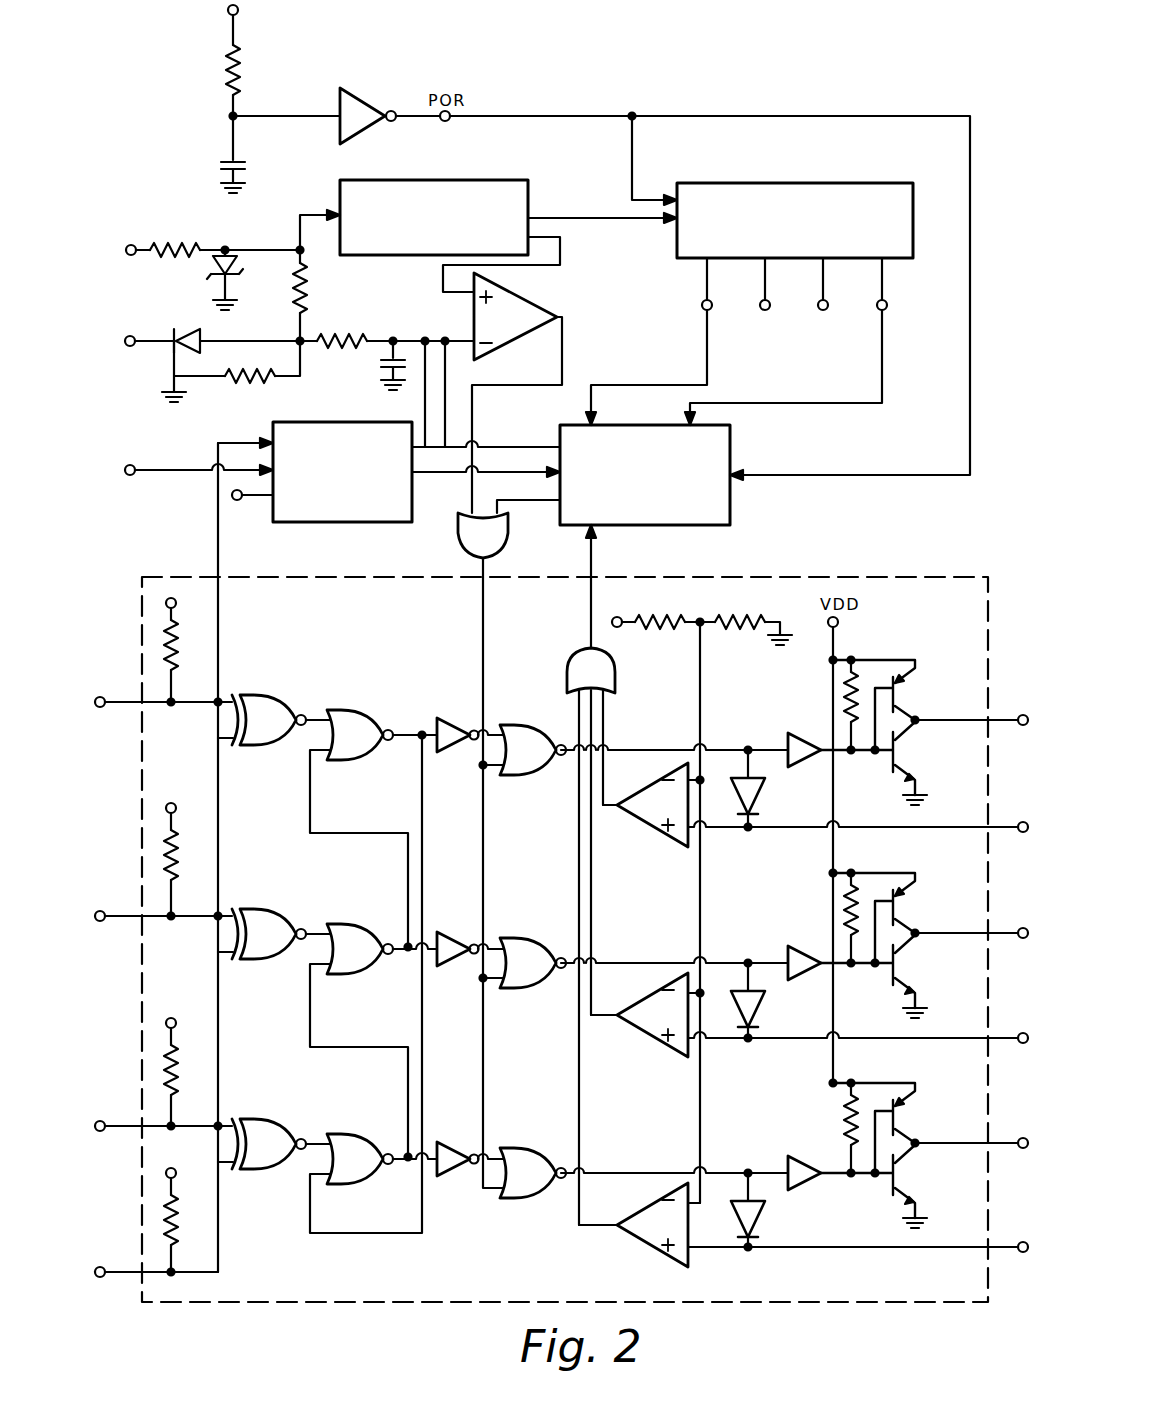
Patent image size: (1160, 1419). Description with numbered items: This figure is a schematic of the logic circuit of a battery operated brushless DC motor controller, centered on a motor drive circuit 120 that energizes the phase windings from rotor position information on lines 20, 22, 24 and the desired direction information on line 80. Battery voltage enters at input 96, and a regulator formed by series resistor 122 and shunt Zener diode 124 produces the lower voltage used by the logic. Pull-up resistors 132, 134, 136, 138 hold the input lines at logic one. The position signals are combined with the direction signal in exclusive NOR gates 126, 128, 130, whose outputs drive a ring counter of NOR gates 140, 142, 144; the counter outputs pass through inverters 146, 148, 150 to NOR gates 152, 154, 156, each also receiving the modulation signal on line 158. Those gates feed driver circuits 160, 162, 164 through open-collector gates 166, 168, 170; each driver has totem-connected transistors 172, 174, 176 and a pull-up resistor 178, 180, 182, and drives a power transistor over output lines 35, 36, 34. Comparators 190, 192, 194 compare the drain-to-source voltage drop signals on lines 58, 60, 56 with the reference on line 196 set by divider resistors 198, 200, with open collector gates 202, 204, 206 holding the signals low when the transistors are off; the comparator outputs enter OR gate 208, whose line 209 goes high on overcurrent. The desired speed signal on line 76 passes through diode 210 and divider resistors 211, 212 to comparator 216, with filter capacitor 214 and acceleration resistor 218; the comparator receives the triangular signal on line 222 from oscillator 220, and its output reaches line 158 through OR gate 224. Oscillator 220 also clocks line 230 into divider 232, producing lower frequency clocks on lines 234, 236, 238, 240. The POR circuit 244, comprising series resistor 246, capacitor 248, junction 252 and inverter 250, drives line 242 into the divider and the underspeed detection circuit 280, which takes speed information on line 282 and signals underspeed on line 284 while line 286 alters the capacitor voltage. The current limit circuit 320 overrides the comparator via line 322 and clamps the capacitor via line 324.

The rotor position line 20 is at (125, 922).
The rotor position line 22 is at (125, 1132).
The rotor position line 24 is at (125, 708).
The output line 34 is at (1012, 1138).
The output line 35 is at (1012, 715).
The output line 36 is at (1012, 928).
The drain-to-source voltage drop signal line 56 is at (1012, 1243).
The drain-to-source voltage drop signal line 58 is at (1012, 822).
The drain-to-source voltage drop signal line 60 is at (1012, 1033).
The desired speed signal line 76 is at (141, 347).
The desired direction signal line 80 is at (125, 1278).
The battery voltage input 96 is at (141, 245).
The motor drive circuit 120 is at (866, 585).
The series resistor 122 is at (188, 245).
The shunt Zener diode 124 is at (234, 283).
The exclusive NOR gate 126 is at (257, 710).
The exclusive NOR gate 128 is at (258, 925).
The exclusive NOR gate 130 is at (258, 1135).
The pull-up resistor 132 is at (175, 672).
The pull-up resistor 134 is at (176, 850).
The pull-up resistor 136 is at (176, 1062).
The pull-up resistor 138 is at (176, 1228).
The NOR gate 140 is at (350, 715).
The NOR gate 142 is at (352, 930).
The NOR gate 144 is at (352, 1140).
The inverter 146 is at (455, 715).
The inverter 148 is at (455, 930).
The inverter 150 is at (455, 1178).
The NOR gate 152 is at (524, 772).
The NOR gate 154 is at (540, 945).
The NOR gate 156 is at (525, 1160).
The modulation signal line 158 is at (480, 606).
The power transistor driver circuit 160 is at (901, 699).
The power transistor driver circuit 162 is at (882, 932).
The power transistor driver circuit 164 is at (887, 1139).
The open-collector gate 166 is at (806, 738).
The open-collector gate 168 is at (806, 950).
The open-collector gate 170 is at (806, 1158).
The totem-connected transistor pair 172 is at (912, 694).
The totem-connected transistor pair 174 is at (912, 908).
The totem-connected transistor pair 176 is at (912, 1138).
The pull-up resistor 178 is at (856, 730).
The pull-up resistor 180 is at (848, 920).
The pull-up resistor 182 is at (848, 1130).
The comparator 190 is at (658, 835).
The comparator 192 is at (660, 1045).
The comparator 194 is at (652, 1235).
The reference voltage line 196 is at (696, 714).
The voltage divider resistor 198 is at (666, 630).
The voltage divider resistor 200 is at (737, 628).
The open collector gate 202 is at (756, 797).
The open collector gate 204 is at (756, 1005).
The open collector gate 206 is at (757, 1218).
The OR gate 208 is at (579, 668).
The overcurrent output line 209 is at (601, 585).
The diode 210 is at (186, 330).
The voltage divider resistor 211 is at (306, 291).
The voltage divider resistor 212 is at (241, 382).
The filter capacitor 214 is at (389, 368).
The comparator 216 is at (516, 318).
The resistor 218 is at (345, 336).
The oscillator circuit 220 is at (396, 196).
The triangular signal line 222 is at (561, 265).
The OR gate 224 is at (500, 541).
The clock signal line 230 is at (600, 215).
The divider 232 is at (790, 205).
The divider output line 234 is at (701, 300).
The divider output line 236 is at (768, 312).
The divider output line 238 is at (829, 312).
The divider output line 240 is at (886, 290).
The Power-On-Reset signal line 242 is at (589, 112).
The Power-On-Reset circuit 244 is at (290, 50).
The series resistor 246 is at (226, 62).
The capacitor 248 is at (235, 115).
The inverter 250 is at (358, 100).
The junction 252 is at (237, 120).
The underspeed detection circuit 280 is at (345, 524).
The motor speed line 282 is at (222, 557).
The underspeed output line 284 is at (445, 480).
The override output line 286 is at (424, 404).
The current limit circuit 320 is at (717, 500).
The current limit output line 322 is at (547, 500).
The clamp output line 324 is at (490, 443).